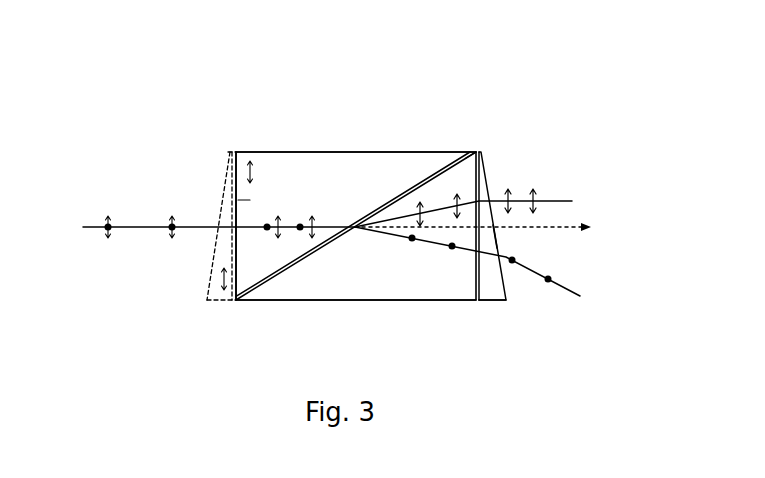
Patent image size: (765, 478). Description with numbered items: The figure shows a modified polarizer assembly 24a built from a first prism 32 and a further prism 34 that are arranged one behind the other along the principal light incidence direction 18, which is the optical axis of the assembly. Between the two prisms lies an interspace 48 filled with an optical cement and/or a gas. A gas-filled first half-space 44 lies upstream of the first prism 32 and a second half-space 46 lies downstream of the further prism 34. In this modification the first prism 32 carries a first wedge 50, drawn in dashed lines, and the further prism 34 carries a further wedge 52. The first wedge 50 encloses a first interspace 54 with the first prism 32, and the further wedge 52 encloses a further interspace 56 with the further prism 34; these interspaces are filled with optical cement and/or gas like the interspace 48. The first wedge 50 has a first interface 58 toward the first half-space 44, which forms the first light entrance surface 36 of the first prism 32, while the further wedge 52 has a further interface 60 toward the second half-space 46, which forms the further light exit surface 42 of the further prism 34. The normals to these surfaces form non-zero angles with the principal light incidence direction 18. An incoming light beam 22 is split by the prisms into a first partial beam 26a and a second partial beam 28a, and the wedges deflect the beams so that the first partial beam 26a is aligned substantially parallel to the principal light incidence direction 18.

The principal light incidence direction 18 is at (566, 230).
The light beam 22 is at (83, 227).
The polarizer assembly 24a is at (341, 108).
The first partial beam 26a is at (514, 197).
The second partial beam 28a is at (528, 277).
The first prism 32 is at (266, 163).
The further prism 34 is at (406, 291).
The first light entrance surface 36 is at (238, 200).
The further light exit surface 42 is at (472, 175).
The first half-space 44 is at (153, 140).
The second half-space 46 is at (614, 178).
The interspace 48 is at (289, 272).
The first wedge 50 is at (211, 301).
The further wedge 52 is at (492, 301).
The first interspace 54 is at (237, 301).
The further interspace 56 is at (477, 301).
The first interface 58 is at (219, 206).
The further interface 60 is at (508, 233).